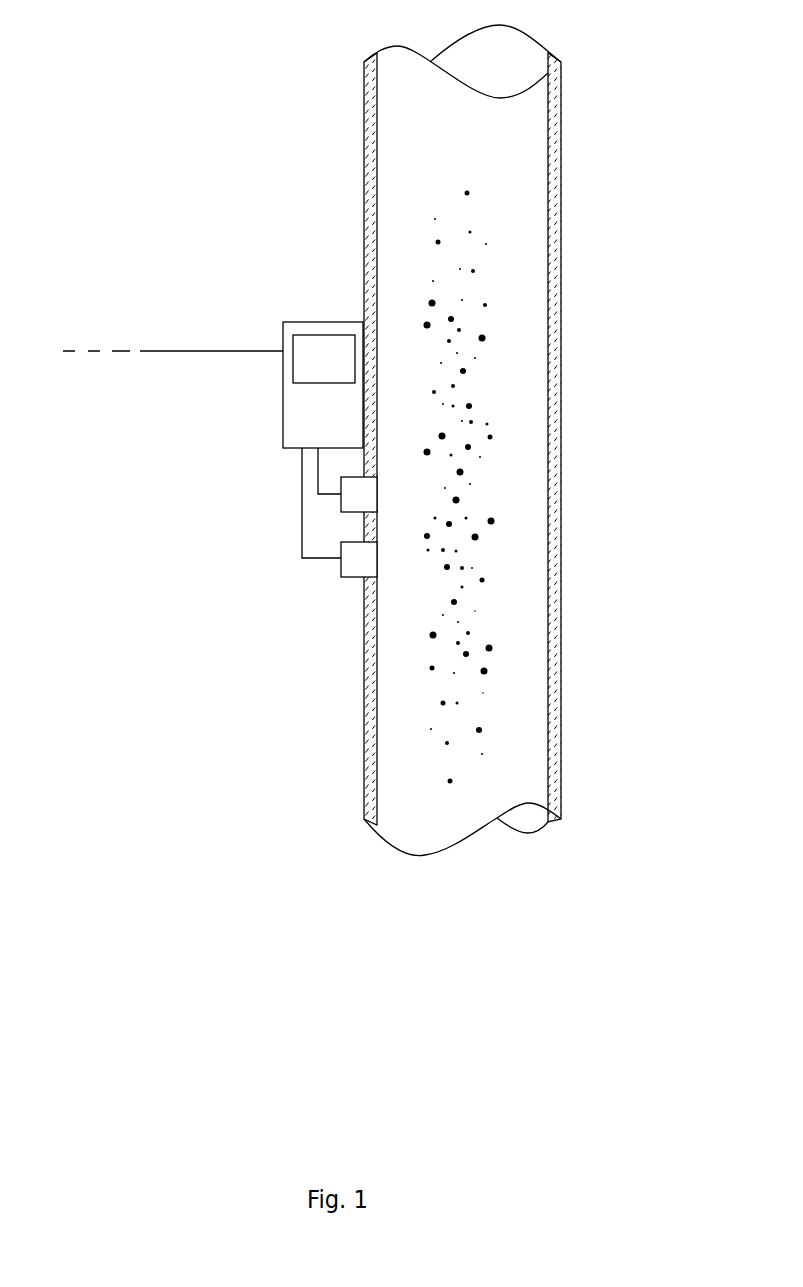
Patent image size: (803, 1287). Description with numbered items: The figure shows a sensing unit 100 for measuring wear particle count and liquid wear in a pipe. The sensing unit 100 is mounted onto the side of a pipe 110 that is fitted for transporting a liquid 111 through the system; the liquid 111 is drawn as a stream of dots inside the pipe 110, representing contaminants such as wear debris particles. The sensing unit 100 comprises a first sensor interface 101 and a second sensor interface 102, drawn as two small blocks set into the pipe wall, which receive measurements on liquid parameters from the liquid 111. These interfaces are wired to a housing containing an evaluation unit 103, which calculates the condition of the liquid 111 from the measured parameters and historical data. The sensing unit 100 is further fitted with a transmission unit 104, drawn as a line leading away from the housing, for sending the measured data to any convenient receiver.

The sensing unit 100 is at (238, 310).
The first sensor interface 101 is at (359, 492).
The second sensor interface 102 is at (359, 558).
The evaluation unit 103 is at (318, 352).
The transmission unit 104 is at (218, 351).
The pipe 110 is at (555, 207).
The liquid 111 is at (498, 385).